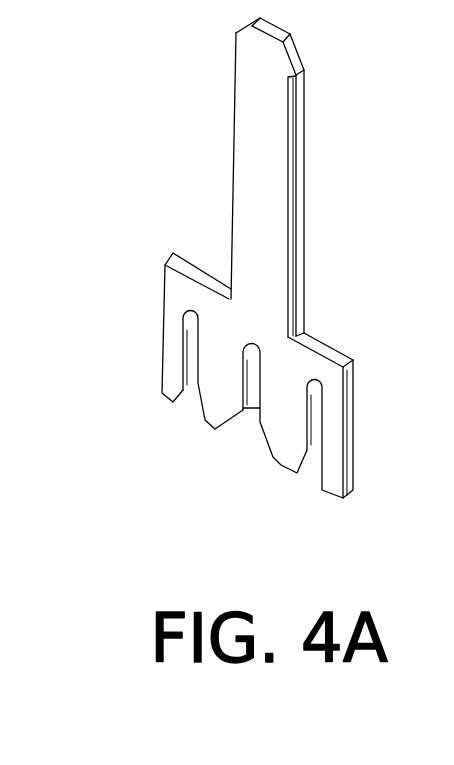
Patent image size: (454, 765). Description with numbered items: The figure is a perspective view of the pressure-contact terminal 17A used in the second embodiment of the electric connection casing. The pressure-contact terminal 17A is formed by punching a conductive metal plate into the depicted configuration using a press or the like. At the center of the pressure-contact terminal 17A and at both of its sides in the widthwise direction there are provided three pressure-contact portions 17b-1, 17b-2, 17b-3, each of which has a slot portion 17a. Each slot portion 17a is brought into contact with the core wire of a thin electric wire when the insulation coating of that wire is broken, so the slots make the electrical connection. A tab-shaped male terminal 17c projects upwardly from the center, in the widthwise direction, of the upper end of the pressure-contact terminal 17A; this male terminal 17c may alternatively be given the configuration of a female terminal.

The pressure-contact terminal 17A is at (234, 294).
The slot portion 17a is at (188, 316).
The pressure-contact portion 17b-1 is at (198, 365).
The pressure-contact portion 17b-2 is at (243, 410).
The pressure-contact portion 17b-3 is at (326, 478).
The tab-shaped male terminal 17c is at (272, 122).